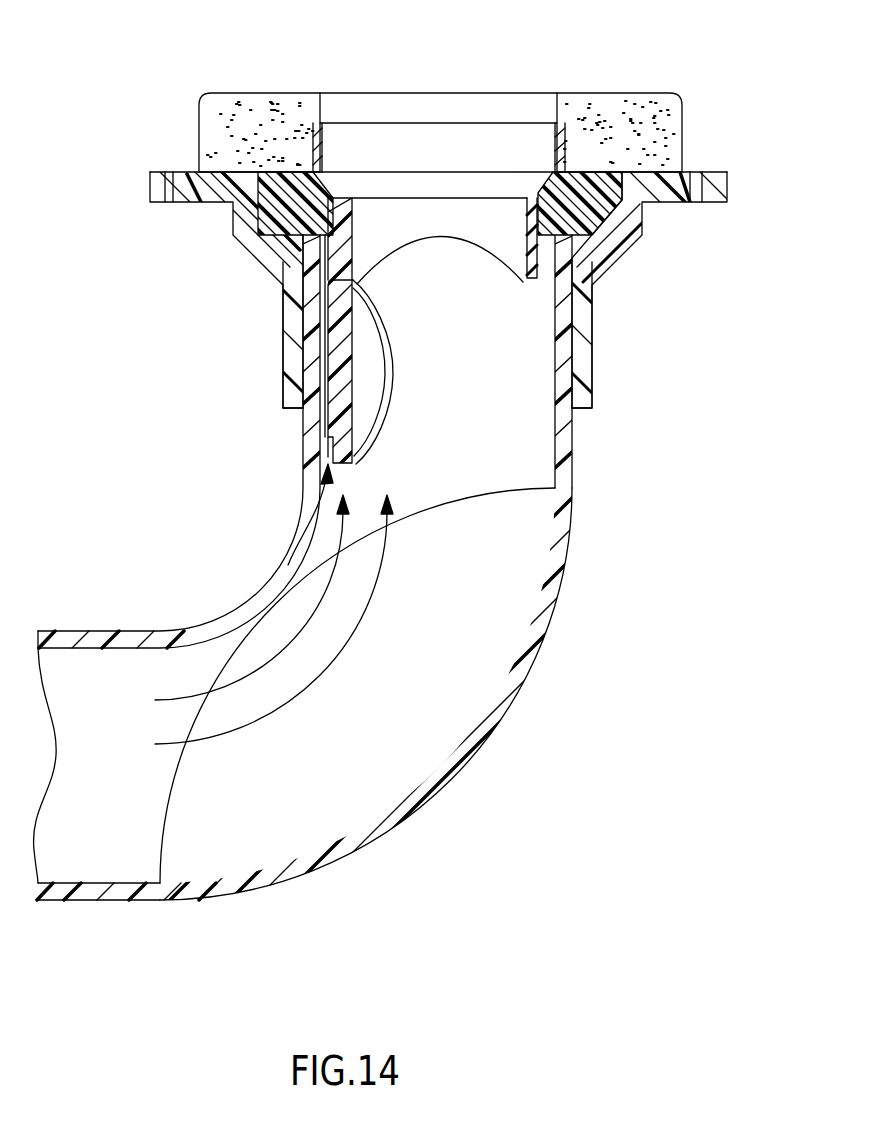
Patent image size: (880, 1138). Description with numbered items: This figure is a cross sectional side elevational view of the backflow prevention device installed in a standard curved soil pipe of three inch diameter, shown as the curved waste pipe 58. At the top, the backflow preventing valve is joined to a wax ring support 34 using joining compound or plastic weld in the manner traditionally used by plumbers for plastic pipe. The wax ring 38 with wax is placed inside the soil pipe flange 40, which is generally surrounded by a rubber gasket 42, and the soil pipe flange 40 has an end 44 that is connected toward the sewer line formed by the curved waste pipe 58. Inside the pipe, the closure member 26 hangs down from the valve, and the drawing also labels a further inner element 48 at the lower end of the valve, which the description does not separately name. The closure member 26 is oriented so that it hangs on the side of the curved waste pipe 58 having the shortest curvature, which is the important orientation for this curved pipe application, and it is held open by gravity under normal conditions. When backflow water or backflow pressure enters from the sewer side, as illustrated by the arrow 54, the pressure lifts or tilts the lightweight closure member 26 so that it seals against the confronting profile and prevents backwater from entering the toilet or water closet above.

The closure member 26 is at (333, 347).
The wax ring support 34 is at (458, 138).
The wax ring 38 is at (674, 112).
The soil pipe flange 40 is at (728, 188).
The rubber gasket 42 is at (645, 237).
The end 44 is at (596, 374).
The inner tube 48 is at (343, 444).
The arrow 54 is at (297, 540).
The curved waste pipe 58 is at (563, 542).